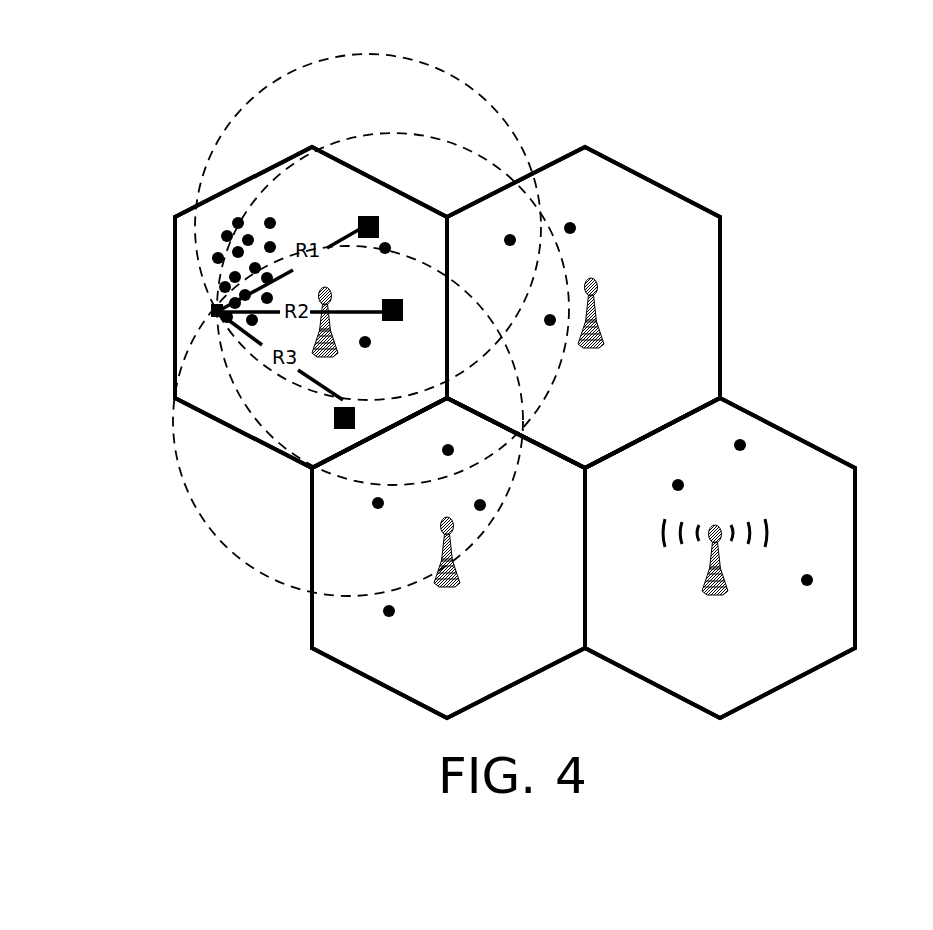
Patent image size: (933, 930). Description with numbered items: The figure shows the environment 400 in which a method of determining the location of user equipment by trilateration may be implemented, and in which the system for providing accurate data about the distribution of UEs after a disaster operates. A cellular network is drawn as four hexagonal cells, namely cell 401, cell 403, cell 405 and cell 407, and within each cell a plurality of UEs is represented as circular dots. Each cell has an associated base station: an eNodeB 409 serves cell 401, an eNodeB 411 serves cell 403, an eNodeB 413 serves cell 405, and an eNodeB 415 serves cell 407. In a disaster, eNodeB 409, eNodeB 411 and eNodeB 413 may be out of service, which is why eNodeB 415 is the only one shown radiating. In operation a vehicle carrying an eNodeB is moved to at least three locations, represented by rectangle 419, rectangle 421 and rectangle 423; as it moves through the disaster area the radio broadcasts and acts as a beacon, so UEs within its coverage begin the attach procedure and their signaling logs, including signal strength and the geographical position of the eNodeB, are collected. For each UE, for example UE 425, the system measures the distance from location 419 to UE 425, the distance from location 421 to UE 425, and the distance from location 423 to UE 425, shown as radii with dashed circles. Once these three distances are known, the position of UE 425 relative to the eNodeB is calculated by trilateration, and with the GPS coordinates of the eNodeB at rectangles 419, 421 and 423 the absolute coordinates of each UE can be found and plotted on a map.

The environment 400 is at (130, 108).
The cell 401 is at (175, 283).
The cell 403 is at (722, 263).
The cell 405 is at (340, 665).
The cell 407 is at (856, 490).
The eNodeB 409 is at (333, 346).
The eNodeB 411 is at (600, 296).
The eNodeB 413 is at (445, 538).
The eNodeB 415 is at (716, 528).
The rectangle 419 is at (360, 217).
The rectangle 421 is at (388, 299).
The rectangle 423 is at (334, 416).
The UE 425 is at (211, 311).